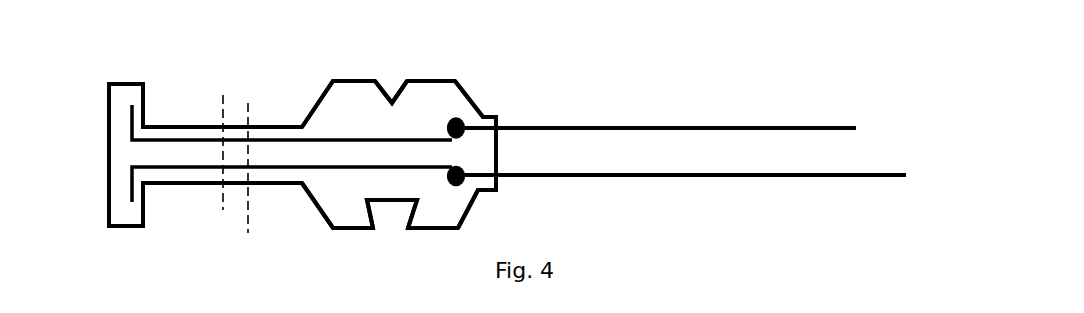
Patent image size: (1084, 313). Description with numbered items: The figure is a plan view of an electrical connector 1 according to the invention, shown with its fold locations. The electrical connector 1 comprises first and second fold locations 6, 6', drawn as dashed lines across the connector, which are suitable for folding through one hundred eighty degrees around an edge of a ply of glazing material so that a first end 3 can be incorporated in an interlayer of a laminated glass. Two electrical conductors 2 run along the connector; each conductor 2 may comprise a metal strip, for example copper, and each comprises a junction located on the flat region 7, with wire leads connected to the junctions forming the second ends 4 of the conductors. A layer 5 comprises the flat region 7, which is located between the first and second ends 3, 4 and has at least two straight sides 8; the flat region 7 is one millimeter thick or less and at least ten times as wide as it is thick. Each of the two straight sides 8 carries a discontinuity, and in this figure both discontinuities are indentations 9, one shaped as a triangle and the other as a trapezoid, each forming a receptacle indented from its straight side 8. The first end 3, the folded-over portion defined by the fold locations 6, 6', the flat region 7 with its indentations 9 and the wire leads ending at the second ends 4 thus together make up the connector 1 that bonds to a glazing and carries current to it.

The electrical connector 1 is at (142, 60).
The electrical conductor 2 is at (620, 163).
The first end 3 is at (128, 118).
The second end 4 is at (884, 173).
The layer 5 is at (457, 82).
The first fold location 6 is at (193, 138).
The second fold location 6' is at (209, 195).
The flat region 7 is at (293, 93).
The straight side 8 is at (360, 80).
The indentation 9 is at (388, 78).